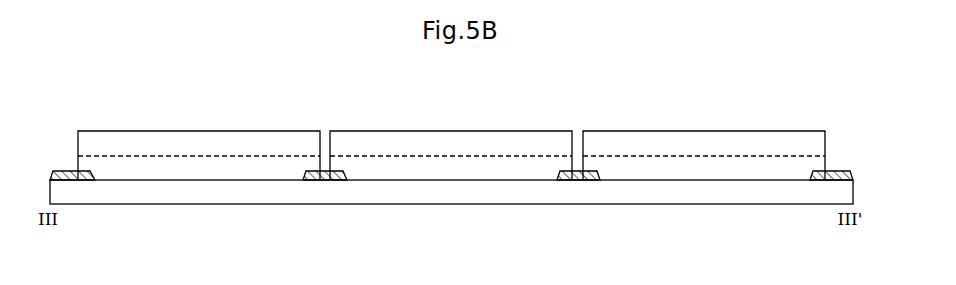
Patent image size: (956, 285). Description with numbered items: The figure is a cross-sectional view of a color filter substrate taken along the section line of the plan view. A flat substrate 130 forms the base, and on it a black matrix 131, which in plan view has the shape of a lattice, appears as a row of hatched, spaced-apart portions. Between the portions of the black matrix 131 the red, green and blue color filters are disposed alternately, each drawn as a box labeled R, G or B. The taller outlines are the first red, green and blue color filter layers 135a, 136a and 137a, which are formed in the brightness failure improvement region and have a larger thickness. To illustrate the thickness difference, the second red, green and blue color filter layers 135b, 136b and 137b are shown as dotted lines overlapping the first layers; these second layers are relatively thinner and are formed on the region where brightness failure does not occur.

The substrate 130 is at (455, 200).
The black matrix 131 is at (831, 167).
The first red color filter layer 135a is at (280, 148).
The second red color filter layer 135b is at (152, 157).
The first green color filter layer 136a is at (533, 147).
The second green color filter layer 136b is at (365, 157).
The first blue color filter layer 137a is at (786, 147).
The second blue color filter layer 137b is at (645, 157).